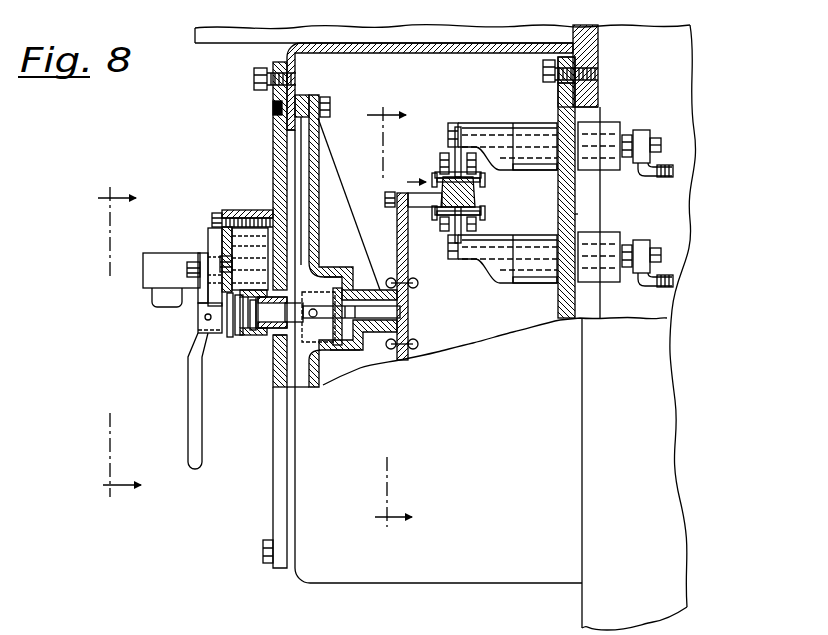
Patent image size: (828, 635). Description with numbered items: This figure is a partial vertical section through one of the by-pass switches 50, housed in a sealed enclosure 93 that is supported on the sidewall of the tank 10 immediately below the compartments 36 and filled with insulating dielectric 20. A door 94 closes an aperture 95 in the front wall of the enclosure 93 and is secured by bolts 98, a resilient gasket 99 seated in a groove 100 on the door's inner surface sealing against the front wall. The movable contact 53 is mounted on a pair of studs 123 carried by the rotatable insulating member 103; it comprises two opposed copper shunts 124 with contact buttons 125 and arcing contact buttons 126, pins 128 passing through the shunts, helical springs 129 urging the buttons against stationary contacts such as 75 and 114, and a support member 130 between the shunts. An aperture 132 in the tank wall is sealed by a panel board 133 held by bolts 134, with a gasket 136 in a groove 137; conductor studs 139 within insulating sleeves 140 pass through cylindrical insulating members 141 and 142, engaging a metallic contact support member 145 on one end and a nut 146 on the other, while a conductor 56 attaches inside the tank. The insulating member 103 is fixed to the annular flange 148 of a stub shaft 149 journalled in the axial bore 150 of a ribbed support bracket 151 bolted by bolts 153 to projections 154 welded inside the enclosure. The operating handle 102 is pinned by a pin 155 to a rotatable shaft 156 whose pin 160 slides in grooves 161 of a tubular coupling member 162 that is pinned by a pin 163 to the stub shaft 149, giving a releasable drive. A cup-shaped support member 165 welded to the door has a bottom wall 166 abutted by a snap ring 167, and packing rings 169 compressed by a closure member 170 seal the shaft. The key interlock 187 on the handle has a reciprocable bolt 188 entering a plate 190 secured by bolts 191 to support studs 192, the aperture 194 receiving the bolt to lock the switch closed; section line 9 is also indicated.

The tank 10 is at (645, 481).
The section line 9- 9 is at (384, 317).
The insulating dielectric 20 is at (460, 62).
The compartments 36 is at (201, 49).
The by-pass switch 50 is at (494, 323).
The movable contact 53 is at (407, 183).
The conductor 56 is at (672, 284).
The stationary contact 75 is at (457, 259).
The sealed enclosure 93 is at (497, 508).
The door 94 is at (273, 497).
The aperture 95 is at (284, 152).
The bolts 98 is at (256, 75).
The resilient gasket 99 is at (285, 128).
The groove 100 is at (272, 107).
The operating handle 102 is at (189, 450).
The insulating member 103 is at (397, 246).
The stationary contact 114 is at (458, 127).
The studs 123 is at (385, 197).
The shunts 124 is at (477, 208).
The contact buttons 125 is at (453, 234).
The arcing contact buttons 126 is at (452, 152).
The pins 128 is at (481, 179).
The helical springs 129 is at (439, 167).
The support member 130 is at (475, 190).
The aperture 132 is at (594, 108).
The panel board 133 is at (578, 214).
The bolts 134 is at (543, 74).
The resilient gasket 136 is at (578, 97).
The groove 137 is at (562, 94).
The conductor studs 139 is at (663, 146).
The insulating sleeves 140 is at (579, 187).
The cylindrical insulating member 141 is at (537, 172).
The cylindrical insulating member 142 is at (605, 172).
The metallic contact support member 145 is at (493, 128).
The nut 146 is at (640, 136).
The annular flange 148 is at (410, 331).
The stub shaft 149 is at (404, 308).
The axial bore 150 is at (378, 346).
The ribbed support bracket 151 is at (348, 223).
The bolts 153 is at (329, 100).
The projections 154 is at (303, 95).
The pin 155 is at (204, 318).
The rotatable shaft 156 is at (281, 320).
The pin 160 is at (318, 298).
The grooves 161 is at (323, 323).
The tubular coupling member 162 is at (338, 276).
The pin 163 is at (344, 276).
The cup-shaped metallic support member 165 is at (258, 338).
The bottom wall 166 is at (293, 388).
The snap ring 167 is at (273, 360).
The packing rings 169 is at (263, 290).
The closure member 170 is at (231, 338).
The mechanical key interlock 187 is at (150, 278).
The bolt 188 is at (232, 263).
The plate 190 is at (222, 238).
The bolts 191 is at (210, 214).
The support studs 192 is at (247, 210).
The aperture 194 is at (232, 250).